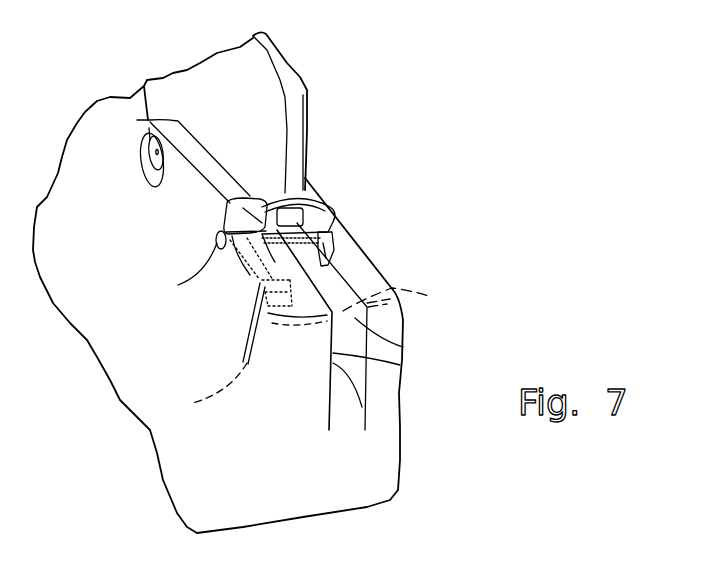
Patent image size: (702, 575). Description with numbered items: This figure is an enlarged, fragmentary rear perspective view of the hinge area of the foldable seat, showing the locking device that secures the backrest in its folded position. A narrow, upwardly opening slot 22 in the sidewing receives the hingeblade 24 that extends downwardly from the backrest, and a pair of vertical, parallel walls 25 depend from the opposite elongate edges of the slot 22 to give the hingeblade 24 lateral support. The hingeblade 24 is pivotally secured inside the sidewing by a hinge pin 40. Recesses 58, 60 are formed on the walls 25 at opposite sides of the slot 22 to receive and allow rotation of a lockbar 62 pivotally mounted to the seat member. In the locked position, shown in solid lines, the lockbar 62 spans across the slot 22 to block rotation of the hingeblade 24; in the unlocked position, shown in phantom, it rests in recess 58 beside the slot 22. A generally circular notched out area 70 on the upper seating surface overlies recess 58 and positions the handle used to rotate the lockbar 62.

The slot 22 is at (333, 278).
The hingeblade 24 is at (297, 82).
The walls 25 is at (408, 388).
The hinge pin 40 is at (148, 143).
The recess 58 is at (399, 299).
The recess 60 is at (331, 240).
The lockbar 62 is at (332, 207).
The notched out area 70 is at (216, 242).